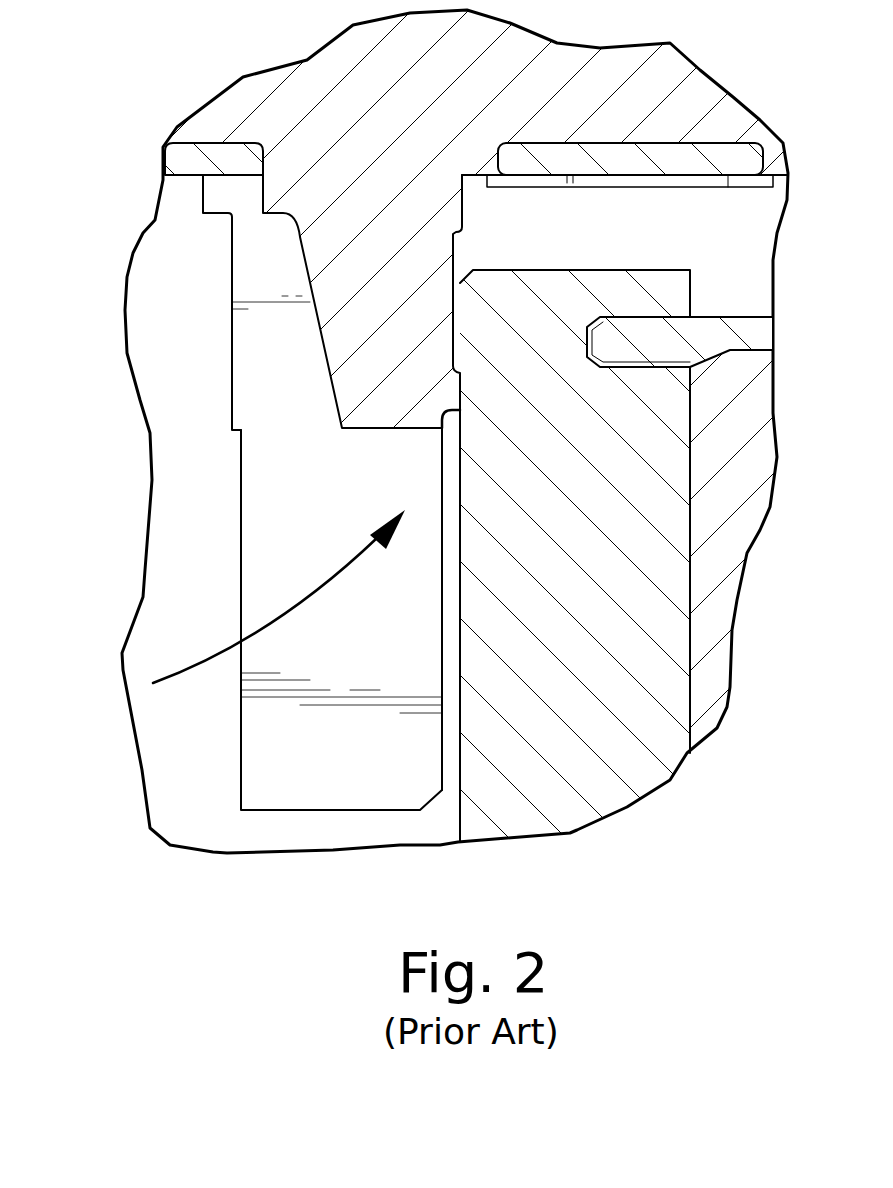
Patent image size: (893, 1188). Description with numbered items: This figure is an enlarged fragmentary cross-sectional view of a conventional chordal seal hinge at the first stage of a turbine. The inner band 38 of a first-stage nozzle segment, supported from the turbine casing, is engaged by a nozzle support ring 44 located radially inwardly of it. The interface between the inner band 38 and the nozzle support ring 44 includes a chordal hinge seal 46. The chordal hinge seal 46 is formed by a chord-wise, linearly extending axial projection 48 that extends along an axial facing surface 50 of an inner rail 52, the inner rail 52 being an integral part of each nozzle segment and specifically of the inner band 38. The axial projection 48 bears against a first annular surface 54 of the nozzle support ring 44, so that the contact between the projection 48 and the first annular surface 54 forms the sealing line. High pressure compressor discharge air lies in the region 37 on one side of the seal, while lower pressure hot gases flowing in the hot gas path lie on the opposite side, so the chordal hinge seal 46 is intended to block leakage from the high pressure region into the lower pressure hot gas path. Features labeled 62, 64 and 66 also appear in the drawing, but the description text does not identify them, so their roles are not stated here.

The region 37 is at (178, 593).
The inner band 38 is at (293, 100).
The nozzle support ring 44 is at (605, 797).
The chordal hinge seal 46 is at (165, 333).
The axial projection 48 is at (453, 395).
The axial facing surface 50 is at (470, 252).
The inner rail 52 is at (333, 240).
The first annular surface 54 is at (458, 585).
The piston 62 is at (622, 242).
The seal ring 64 is at (680, 267).
The seal 66 is at (693, 180).